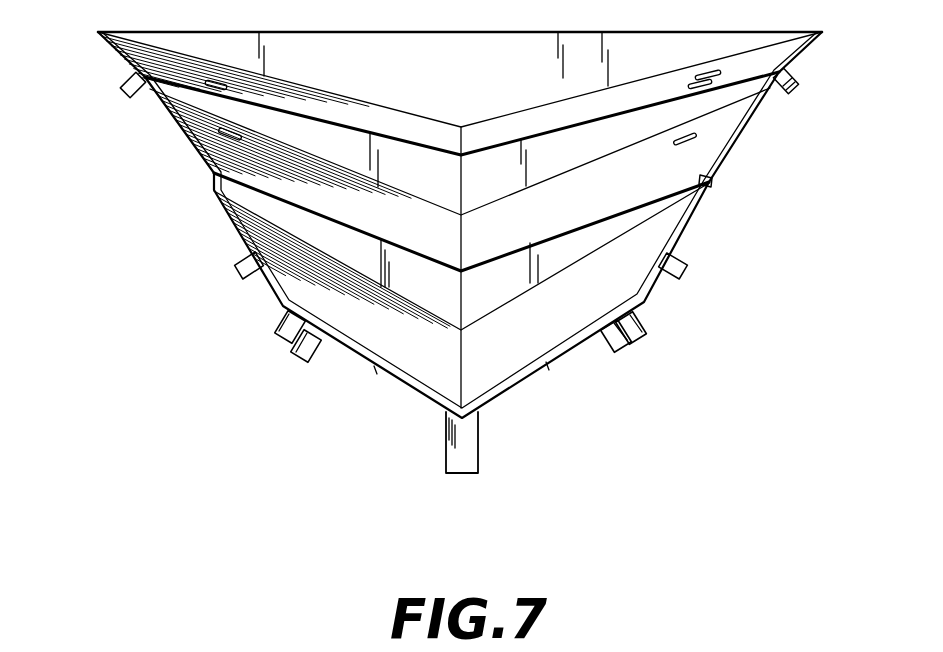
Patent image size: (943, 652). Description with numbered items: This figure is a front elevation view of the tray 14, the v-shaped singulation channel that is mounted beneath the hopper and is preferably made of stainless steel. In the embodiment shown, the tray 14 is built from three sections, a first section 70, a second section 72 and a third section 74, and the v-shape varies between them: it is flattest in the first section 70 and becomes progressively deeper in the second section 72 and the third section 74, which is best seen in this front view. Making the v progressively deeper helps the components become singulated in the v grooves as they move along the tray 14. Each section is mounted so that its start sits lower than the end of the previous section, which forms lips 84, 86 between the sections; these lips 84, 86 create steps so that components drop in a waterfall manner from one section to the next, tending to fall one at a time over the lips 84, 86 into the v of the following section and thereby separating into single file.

The tray 14 is at (770, 302).
The first section 70 is at (148, 55).
The second section 72 is at (205, 138).
The third section 74 is at (284, 259).
The lip 84 is at (792, 82).
The lip 86 is at (702, 183).